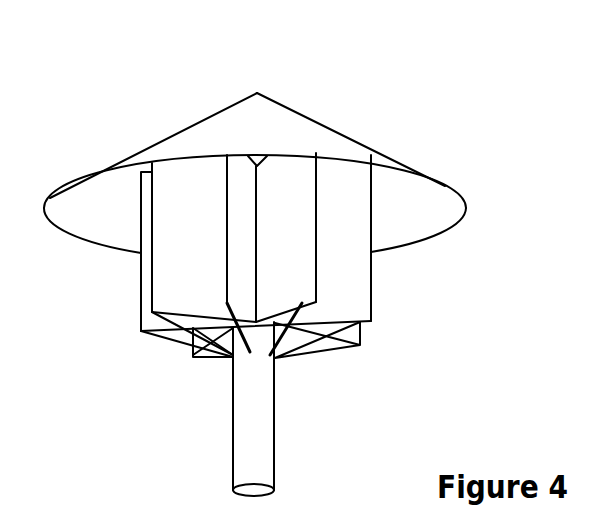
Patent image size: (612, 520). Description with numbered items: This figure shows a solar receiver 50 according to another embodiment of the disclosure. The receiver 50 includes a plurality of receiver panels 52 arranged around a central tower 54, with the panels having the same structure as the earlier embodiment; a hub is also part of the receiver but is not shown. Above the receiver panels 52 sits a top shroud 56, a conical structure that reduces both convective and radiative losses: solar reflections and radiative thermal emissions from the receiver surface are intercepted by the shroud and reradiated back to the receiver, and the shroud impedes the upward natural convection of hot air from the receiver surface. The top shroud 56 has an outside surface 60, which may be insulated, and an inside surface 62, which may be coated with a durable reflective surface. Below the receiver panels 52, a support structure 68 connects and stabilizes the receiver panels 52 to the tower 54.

The receiver 50 is at (433, 70).
The receiver panels 52 is at (372, 292).
The tower 54 is at (277, 437).
The top shroud 56 is at (365, 150).
The outside surface 60 is at (177, 132).
The inside surface 62 is at (80, 223).
The support frame 68 is at (228, 352).